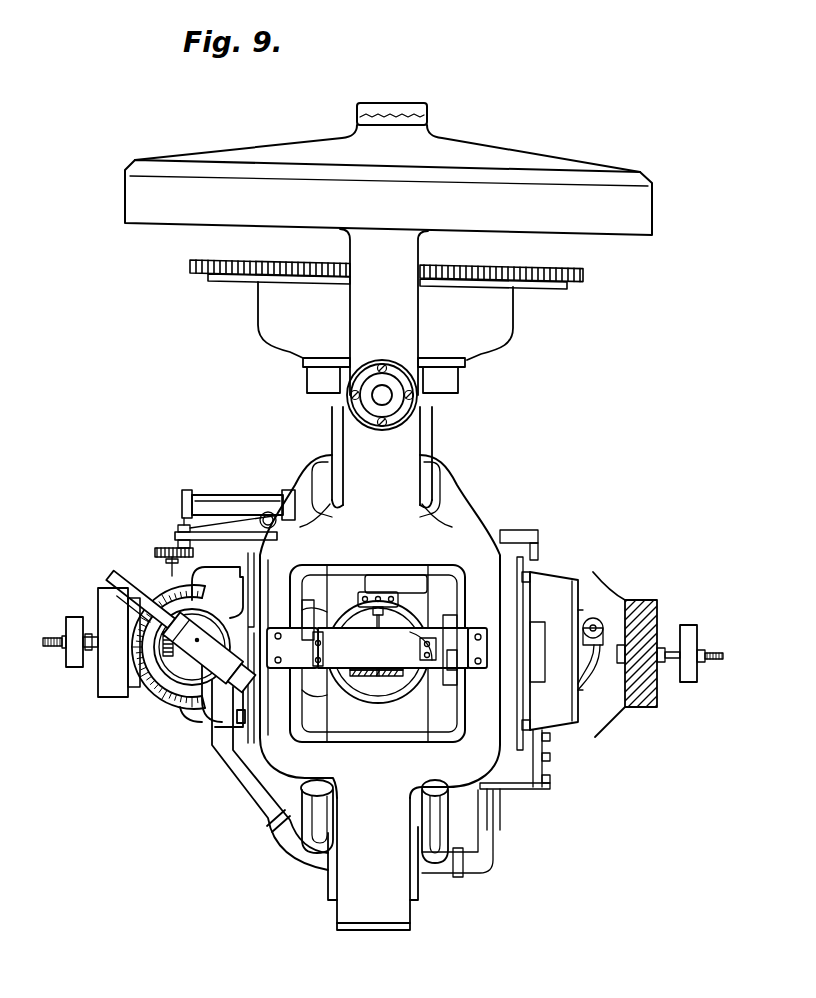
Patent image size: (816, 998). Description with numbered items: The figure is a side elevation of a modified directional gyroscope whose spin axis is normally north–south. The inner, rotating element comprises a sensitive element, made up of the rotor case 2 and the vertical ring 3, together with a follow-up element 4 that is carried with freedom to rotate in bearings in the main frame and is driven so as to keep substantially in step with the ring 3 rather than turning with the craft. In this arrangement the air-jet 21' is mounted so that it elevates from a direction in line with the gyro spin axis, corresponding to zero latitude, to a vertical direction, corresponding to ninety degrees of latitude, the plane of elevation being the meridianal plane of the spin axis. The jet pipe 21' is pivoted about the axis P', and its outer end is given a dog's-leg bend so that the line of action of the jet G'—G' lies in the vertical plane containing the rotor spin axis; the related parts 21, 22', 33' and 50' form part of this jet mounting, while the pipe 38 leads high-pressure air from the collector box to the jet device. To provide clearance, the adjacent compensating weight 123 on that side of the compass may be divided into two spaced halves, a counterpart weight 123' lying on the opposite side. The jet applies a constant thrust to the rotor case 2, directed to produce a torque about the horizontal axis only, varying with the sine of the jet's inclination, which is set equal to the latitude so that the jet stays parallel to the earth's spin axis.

The vertical ring 3 is at (430, 422).
The follow-up element 4 is at (380, 625).
The rotor case 2 is at (228, 572).
The rack 22' is at (169, 542).
The rod 21 is at (131, 579).
The air-jet / jet pipe 21' is at (161, 623).
The line of action of the jet G' is at (188, 632).
The pivot axis of jet pipe P' is at (165, 690).
The spring 33' is at (131, 684).
The sector scale 50' is at (168, 673).
The compensating weight 123 is at (91, 651).
The adjusting knob 123' is at (641, 645).
The pipe 38 is at (264, 806).